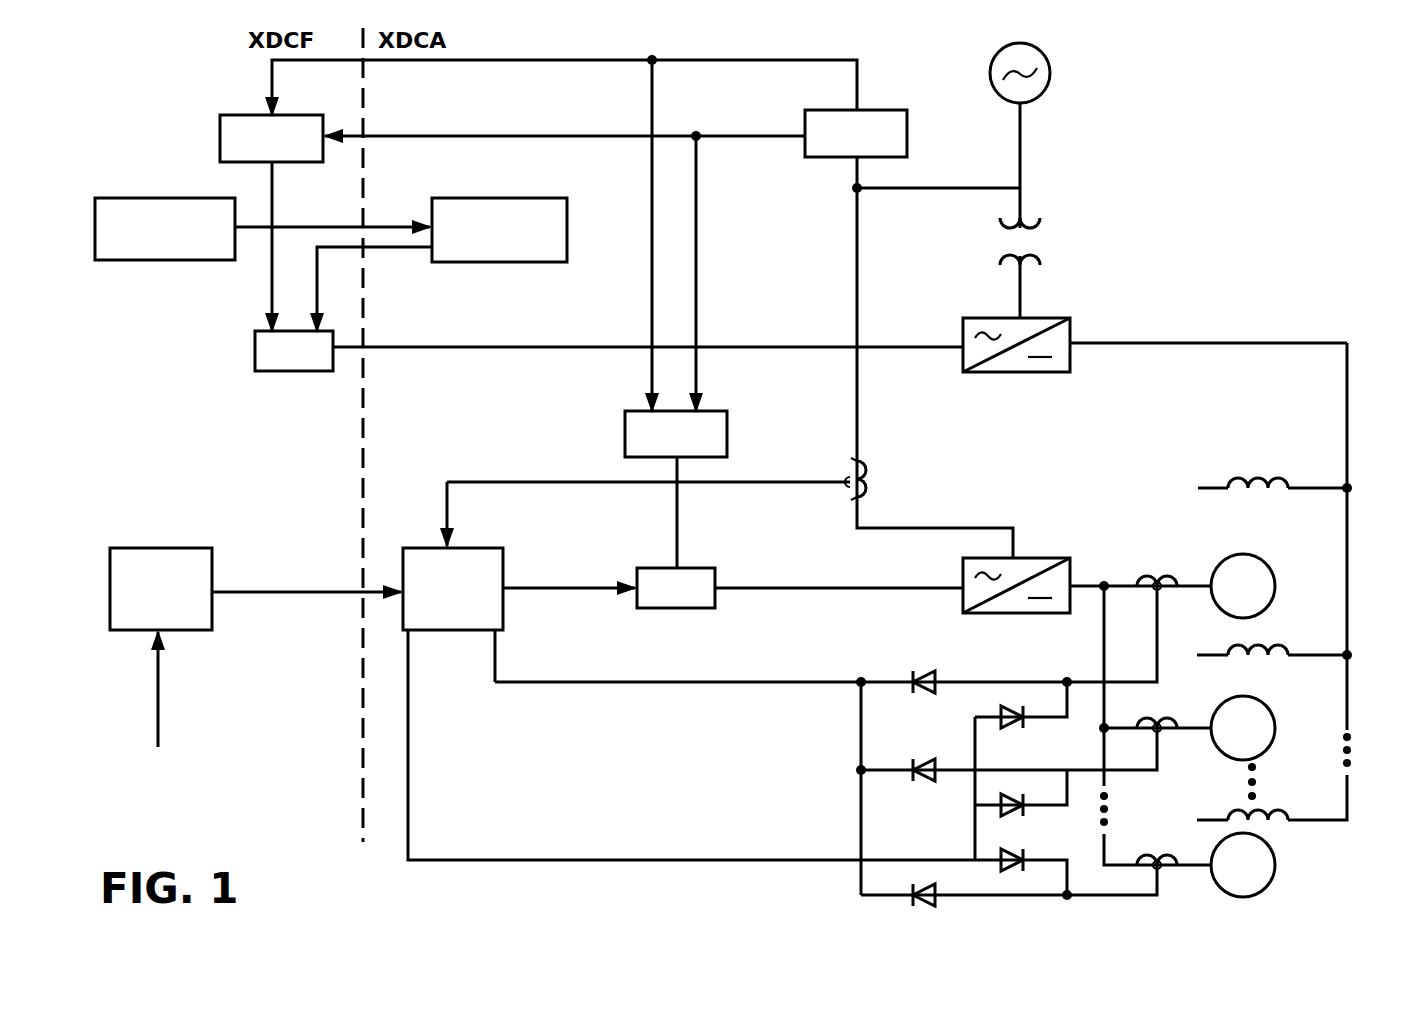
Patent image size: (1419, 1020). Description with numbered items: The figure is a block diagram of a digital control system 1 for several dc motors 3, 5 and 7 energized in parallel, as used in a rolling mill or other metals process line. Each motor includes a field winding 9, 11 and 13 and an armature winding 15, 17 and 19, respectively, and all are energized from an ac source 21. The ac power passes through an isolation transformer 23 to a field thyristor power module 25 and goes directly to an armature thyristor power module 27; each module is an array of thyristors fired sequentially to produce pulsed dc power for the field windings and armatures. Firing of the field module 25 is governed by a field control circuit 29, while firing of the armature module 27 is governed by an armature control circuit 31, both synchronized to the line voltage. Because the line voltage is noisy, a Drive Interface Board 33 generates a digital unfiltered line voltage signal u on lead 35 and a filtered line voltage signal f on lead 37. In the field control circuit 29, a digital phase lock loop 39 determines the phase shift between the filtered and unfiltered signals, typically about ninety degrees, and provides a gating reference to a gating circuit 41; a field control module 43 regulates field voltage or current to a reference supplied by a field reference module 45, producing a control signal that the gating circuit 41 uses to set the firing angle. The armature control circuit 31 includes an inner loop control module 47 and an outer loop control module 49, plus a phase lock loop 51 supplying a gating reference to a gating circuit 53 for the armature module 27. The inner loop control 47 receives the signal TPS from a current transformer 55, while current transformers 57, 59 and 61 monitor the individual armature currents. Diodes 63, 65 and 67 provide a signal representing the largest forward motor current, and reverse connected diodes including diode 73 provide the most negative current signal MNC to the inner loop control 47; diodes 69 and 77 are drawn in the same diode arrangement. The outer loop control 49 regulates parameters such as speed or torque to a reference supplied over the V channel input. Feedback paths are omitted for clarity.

The control system 1 is at (1245, 157).
The dc motor 3 is at (1370, 530).
The dc motor 5 is at (1370, 681).
The dc motor 7 is at (1362, 852).
The field winding 9 is at (1238, 480).
The field winding 11 is at (1273, 648).
The field winding 13 is at (1271, 810).
The armature winding 15 is at (1260, 566).
The armature winding 17 is at (1262, 716).
The armature winding 19 is at (1272, 873).
The ac source 21 is at (1042, 56).
The isolation transformer 23 is at (1042, 238).
The field thyristor power module 25 is at (1070, 320).
The armature thyristor power module 27 is at (1047, 558).
The field control circuit 29 is at (228, 374).
The armature control circuit 31 is at (335, 480).
The Drive Interface Board 33 is at (818, 160).
The lead 35 is at (430, 134).
The lead 37 is at (690, 62).
The digital phase lock loop 39 is at (232, 113).
The gating circuit 41 is at (257, 332).
The field control module 43 is at (520, 198).
The field reference module 45 is at (195, 197).
The inner loop control module 47 is at (426, 548).
The outer loop control module 49 is at (169, 548).
The phase lock loop 51 is at (627, 425).
The gating circuit 53 is at (651, 570).
The current transformer 55 is at (866, 476).
The current transformer 57 is at (1149, 578).
The current transformer 59 is at (1149, 720).
The current transformer 61 is at (1141, 855).
The diode 63 is at (929, 676).
The diode 65 is at (926, 762).
The diode 67 is at (929, 892).
The diode 69 is at (1010, 728).
The reverse connected diode 73 is at (1012, 856).
The diode 77 is at (1010, 802).